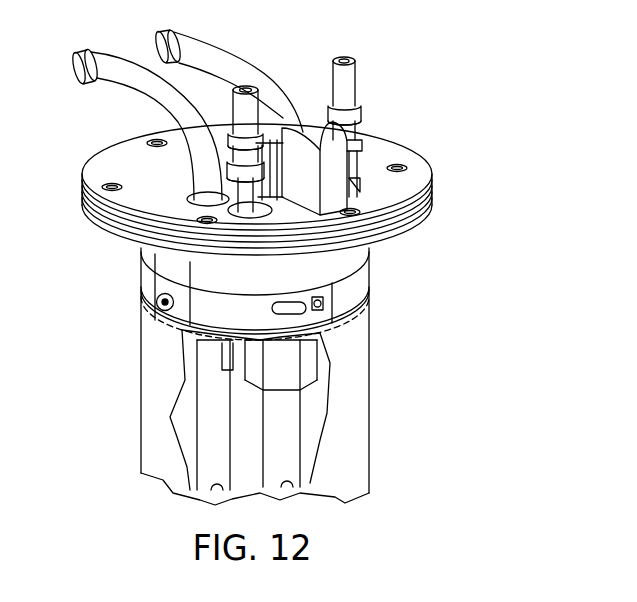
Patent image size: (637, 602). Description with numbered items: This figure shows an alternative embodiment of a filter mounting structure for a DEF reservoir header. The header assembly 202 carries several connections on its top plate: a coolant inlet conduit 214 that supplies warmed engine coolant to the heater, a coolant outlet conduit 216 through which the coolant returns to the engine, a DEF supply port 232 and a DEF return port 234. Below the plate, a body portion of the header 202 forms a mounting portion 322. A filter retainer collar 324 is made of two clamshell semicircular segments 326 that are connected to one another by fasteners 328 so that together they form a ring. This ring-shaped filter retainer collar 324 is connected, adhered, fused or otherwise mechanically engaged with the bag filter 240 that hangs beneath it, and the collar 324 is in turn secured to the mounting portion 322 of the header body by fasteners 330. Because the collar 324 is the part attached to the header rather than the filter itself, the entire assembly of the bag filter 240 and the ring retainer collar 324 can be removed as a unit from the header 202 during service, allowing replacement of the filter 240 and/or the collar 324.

The header assembly 202 is at (445, 154).
The coolant inlet conduit 214 is at (220, 58).
The coolant outlet conduit 216 is at (112, 88).
The DEF supply port 232 is at (350, 82).
The DEF return port 234 is at (250, 113).
The bag filter 240 is at (360, 428).
The mounting portion 322 is at (365, 253).
The filter retainer collar 324 is at (240, 276).
The clamshell semicircular segments 326 is at (360, 282).
The fasteners 328 is at (318, 327).
The fasteners 330 is at (157, 300).